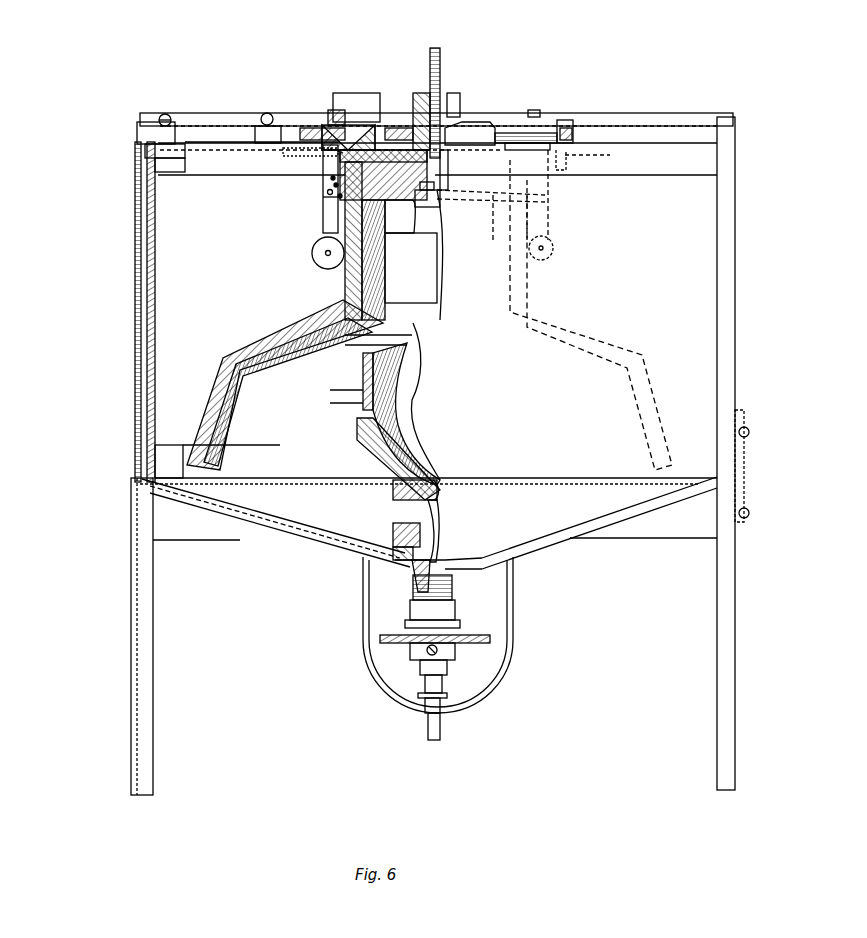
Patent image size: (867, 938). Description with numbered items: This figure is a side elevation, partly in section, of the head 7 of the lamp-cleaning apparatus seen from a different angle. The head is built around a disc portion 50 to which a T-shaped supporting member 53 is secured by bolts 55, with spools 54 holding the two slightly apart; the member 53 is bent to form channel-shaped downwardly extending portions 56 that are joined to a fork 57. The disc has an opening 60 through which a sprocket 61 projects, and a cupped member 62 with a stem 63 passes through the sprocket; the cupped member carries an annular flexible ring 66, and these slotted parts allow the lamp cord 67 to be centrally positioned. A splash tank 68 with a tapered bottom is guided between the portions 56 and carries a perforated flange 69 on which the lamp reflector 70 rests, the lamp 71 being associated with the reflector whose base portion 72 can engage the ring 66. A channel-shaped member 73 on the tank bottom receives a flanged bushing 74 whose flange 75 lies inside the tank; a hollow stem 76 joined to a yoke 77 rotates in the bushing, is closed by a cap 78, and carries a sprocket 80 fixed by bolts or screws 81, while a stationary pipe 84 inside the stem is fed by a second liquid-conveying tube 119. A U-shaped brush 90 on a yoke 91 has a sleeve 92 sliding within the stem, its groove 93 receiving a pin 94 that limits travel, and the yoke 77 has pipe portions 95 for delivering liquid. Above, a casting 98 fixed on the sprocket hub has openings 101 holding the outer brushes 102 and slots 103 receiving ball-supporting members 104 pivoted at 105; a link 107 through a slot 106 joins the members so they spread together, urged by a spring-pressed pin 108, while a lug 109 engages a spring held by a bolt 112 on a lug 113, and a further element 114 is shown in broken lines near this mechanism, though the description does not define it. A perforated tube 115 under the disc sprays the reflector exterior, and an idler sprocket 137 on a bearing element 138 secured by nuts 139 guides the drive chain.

The head 7 is at (128, 352).
The disc portion 50 is at (228, 135).
The T-shaped supporting member 53 is at (265, 114).
The spools 54 is at (150, 131).
The bolts 55 is at (165, 114).
The downwardly extending portions 56 is at (133, 657).
The fork 57 is at (160, 516).
The opening 60 is at (442, 152).
The sprocket 61 is at (447, 118).
The cupped member 62 is at (404, 200).
The stem 63 is at (440, 105).
The annular flexible ring 66 is at (436, 197).
The lamp cord 67 is at (437, 52).
The splash tank 68 is at (152, 299).
The perforated flange 69 is at (172, 478).
The lamp reflector 70 is at (245, 392).
The lamp 71 is at (418, 428).
The base portion 72 is at (418, 272).
The channel-shaped member 73 is at (405, 565).
The flanged bushing 74 is at (415, 582).
The flange 75 is at (400, 552).
The hollow stem 76 is at (428, 668).
The yoke 77 is at (400, 528).
The cap 78 is at (445, 612).
The sprocket 80 is at (450, 652).
The bolts or screws 81 is at (428, 648).
The pipe 84 is at (420, 696).
The brush 90 is at (363, 403).
The yoke 91 is at (360, 438).
The sleeve 92 is at (400, 503).
The groove 93 is at (438, 518).
The pin 94 is at (437, 552).
The pipe portions 95 is at (438, 495).
The casting 98 is at (395, 152).
The openings 101 is at (330, 225).
The brushes 102 is at (528, 278).
The slots 103 is at (330, 178).
The ball-supporting members 104 is at (545, 223).
The pivot pin 105 is at (328, 193).
The slot 106 is at (338, 198).
The link 107 is at (334, 186).
The spring-pressed pin 108 is at (340, 158).
The lug 109 is at (598, 159).
The bolt 112 is at (545, 140).
The lug 113 is at (566, 120).
The link 114 is at (513, 196).
The perforated tube 115 is at (300, 128).
The second liquid-conveying tube 119 is at (442, 726).
The idler sprockets 137 is at (522, 133).
The bearing elements 138 is at (330, 112).
The nuts 139 is at (345, 118).